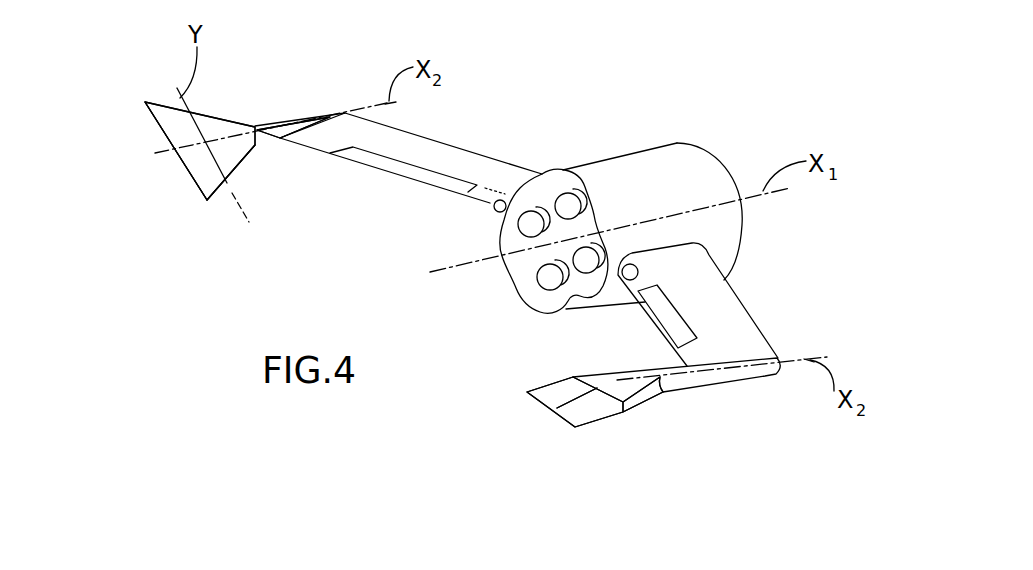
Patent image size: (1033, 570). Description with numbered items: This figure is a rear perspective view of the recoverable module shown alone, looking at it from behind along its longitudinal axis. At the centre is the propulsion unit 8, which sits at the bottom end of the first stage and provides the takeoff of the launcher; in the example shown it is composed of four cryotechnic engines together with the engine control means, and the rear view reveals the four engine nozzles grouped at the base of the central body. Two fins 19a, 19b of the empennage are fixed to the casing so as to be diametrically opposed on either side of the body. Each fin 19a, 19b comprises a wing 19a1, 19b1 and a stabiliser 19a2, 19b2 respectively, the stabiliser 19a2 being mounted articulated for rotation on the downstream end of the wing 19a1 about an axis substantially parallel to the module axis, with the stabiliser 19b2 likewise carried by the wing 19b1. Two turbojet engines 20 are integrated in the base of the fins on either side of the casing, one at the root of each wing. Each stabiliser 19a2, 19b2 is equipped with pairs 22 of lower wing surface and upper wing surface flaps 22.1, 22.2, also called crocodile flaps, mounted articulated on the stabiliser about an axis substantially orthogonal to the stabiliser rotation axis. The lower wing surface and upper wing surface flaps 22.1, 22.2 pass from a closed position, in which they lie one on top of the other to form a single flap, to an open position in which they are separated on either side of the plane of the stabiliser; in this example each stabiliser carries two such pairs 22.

The propulsion unit 8 is at (506, 263).
The fin 19a is at (346, 158).
The wing 19a1 is at (446, 157).
The stabiliser 19a2 is at (230, 104).
The fin 19b is at (648, 361).
The wing 19b1 is at (740, 329).
The stabiliser 19b2 is at (553, 386).
The turbojet engine 20 is at (485, 213).
The pair of lower wing surface and upper wing surface flaps 22 is at (135, 127).
The lower wing surface flap 22.1 is at (196, 162).
The upper wing surface flap 22.2 is at (212, 194).